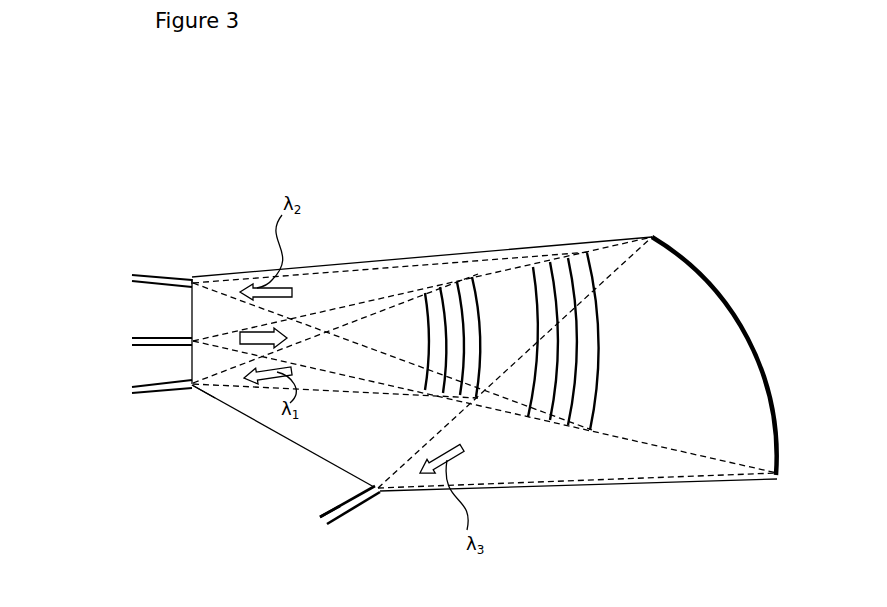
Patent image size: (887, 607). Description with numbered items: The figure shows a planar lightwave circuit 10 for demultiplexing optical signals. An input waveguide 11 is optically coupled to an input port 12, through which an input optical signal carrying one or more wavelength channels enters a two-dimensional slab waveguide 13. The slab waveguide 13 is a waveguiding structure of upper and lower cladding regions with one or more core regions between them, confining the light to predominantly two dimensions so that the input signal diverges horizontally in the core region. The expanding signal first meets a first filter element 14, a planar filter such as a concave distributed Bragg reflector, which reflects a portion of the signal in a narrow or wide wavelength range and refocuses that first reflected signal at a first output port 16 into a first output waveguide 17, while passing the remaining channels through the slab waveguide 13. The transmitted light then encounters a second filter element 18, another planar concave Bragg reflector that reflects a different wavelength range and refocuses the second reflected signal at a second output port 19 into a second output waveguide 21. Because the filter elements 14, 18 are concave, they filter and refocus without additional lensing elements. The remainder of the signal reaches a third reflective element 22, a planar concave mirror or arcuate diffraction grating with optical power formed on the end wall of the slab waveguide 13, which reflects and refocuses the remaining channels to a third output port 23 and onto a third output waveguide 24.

The planar lightwave circuit 10 is at (369, 170).
The input waveguide 11 is at (140, 338).
The input port 12 is at (200, 338).
The slab waveguide 13 is at (644, 352).
The first filter element 14 is at (447, 307).
The first output port 16 is at (197, 388).
The first output waveguide 17 is at (145, 392).
The second filter element 18 is at (568, 278).
The second output port 19 is at (193, 278).
The second output waveguide 21 is at (140, 276).
The third reflective element 22 is at (773, 407).
The third output port 23 is at (388, 493).
The third output waveguide 24 is at (333, 505).